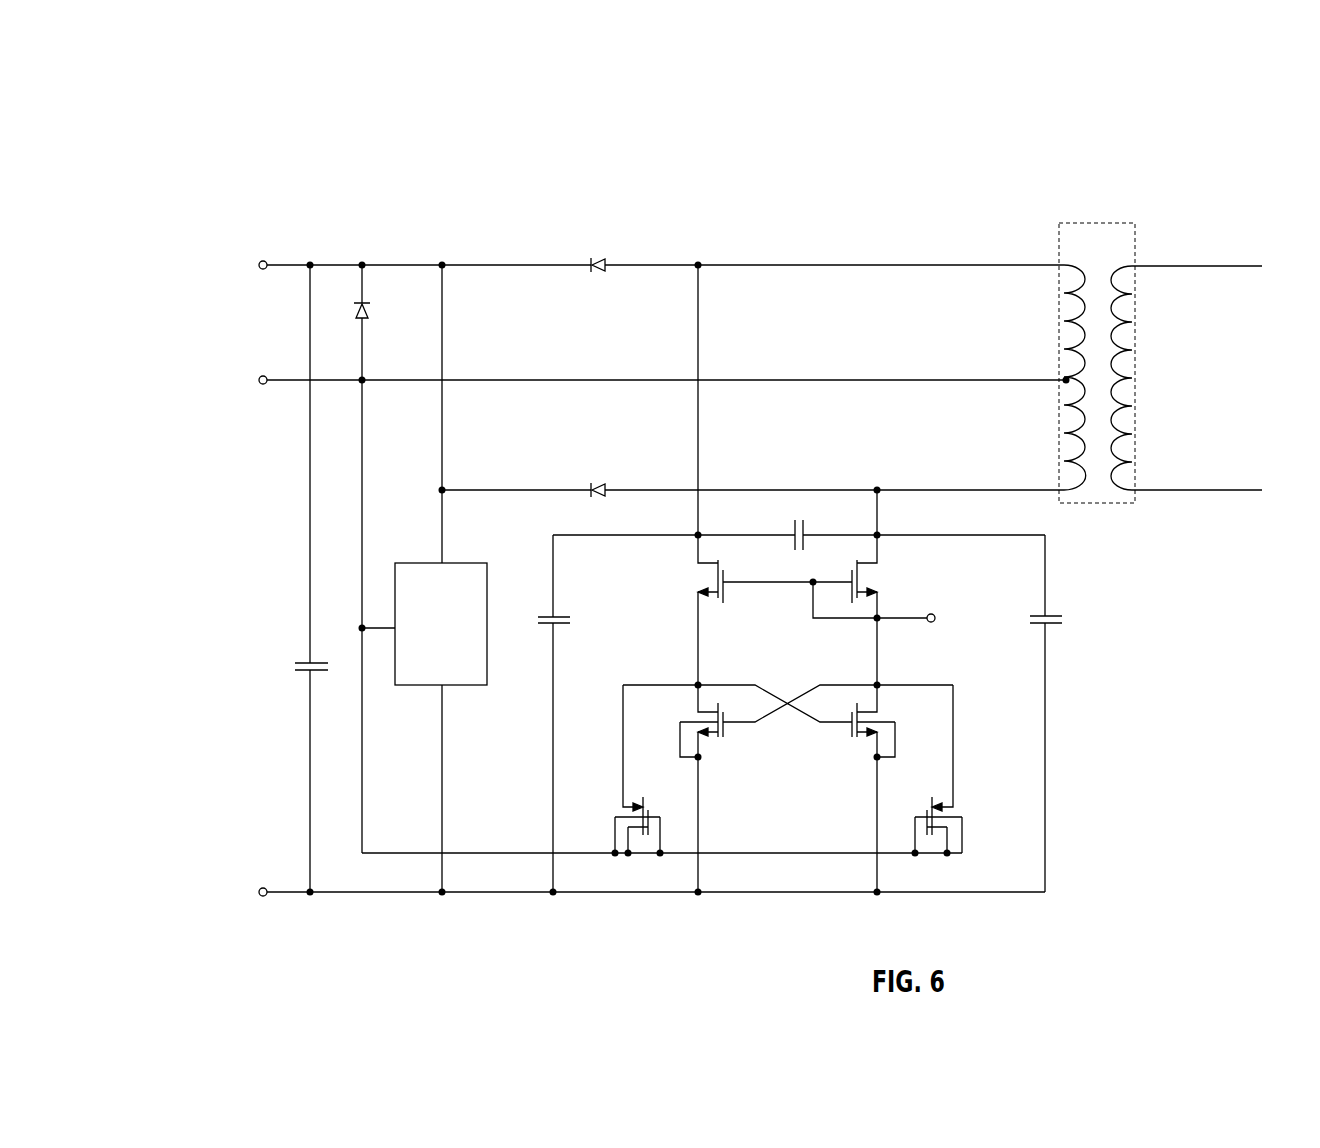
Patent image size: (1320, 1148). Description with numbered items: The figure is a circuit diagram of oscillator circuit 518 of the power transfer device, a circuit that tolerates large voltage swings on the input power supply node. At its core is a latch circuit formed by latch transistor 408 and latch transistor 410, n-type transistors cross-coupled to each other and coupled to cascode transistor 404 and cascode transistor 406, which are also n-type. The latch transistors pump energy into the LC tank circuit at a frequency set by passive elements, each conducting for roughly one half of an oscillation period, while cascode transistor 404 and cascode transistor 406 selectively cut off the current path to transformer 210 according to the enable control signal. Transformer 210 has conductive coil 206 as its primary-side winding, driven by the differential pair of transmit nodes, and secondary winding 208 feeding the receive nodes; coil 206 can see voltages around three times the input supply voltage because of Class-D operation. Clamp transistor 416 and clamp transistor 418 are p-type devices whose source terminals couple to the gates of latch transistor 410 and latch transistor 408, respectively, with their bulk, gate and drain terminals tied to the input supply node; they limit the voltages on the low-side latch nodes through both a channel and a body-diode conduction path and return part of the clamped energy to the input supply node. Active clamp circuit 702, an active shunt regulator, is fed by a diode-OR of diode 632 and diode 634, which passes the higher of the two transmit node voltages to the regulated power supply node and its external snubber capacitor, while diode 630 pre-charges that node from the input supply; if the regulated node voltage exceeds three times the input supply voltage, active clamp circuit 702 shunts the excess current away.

The oscillator circuit 518 is at (212, 168).
The diode 630 is at (368, 313).
The diode 632 is at (593, 272).
The diode 634 is at (592, 488).
The active clamp circuit 702 is at (455, 678).
The transformer 210 is at (1138, 340).
The conductive coil 206 is at (1066, 265).
The secondary winding 208 is at (1127, 267).
The cascode transistor 404 is at (716, 595).
The cascode transistor 406 is at (862, 597).
The latch transistor 408 is at (722, 738).
The latch transistor 410 is at (863, 738).
The clamp transistor 416 is at (633, 805).
The clamp transistor 418 is at (942, 805).